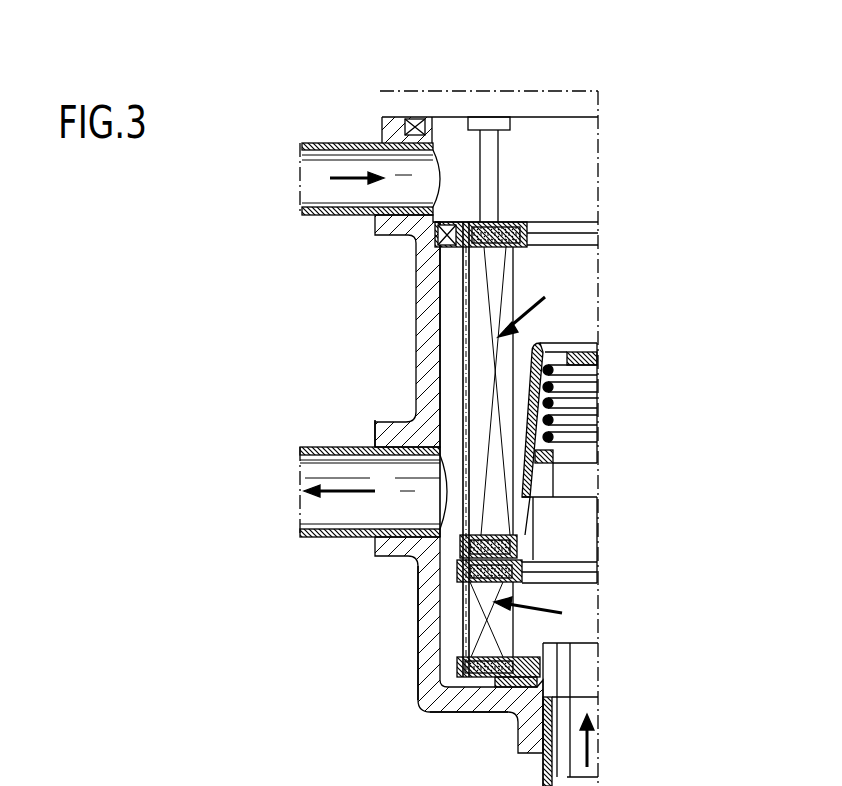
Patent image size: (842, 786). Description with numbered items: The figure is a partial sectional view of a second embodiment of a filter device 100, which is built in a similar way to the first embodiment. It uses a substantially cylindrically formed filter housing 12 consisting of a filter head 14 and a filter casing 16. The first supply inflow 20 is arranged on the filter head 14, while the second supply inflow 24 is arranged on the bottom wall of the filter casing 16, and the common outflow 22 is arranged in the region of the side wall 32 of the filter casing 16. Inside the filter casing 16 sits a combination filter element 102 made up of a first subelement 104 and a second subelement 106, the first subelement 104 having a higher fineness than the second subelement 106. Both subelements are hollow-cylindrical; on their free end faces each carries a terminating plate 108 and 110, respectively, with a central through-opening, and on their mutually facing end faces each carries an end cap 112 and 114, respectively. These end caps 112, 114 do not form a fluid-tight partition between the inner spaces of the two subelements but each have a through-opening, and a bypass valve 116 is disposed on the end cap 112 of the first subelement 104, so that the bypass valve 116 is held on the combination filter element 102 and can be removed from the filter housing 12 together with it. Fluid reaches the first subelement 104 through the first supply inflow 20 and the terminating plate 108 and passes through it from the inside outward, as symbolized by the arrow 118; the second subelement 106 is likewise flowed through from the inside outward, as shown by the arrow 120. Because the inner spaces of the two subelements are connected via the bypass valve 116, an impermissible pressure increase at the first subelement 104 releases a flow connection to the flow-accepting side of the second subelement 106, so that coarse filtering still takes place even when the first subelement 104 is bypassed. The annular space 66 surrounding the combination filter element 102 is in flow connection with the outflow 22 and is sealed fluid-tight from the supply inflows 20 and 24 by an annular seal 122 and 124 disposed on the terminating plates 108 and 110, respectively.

The filter device 100 is at (632, 189).
The filter head 14 is at (377, 127).
The first supply inflow 20 is at (377, 226).
The annular seal 122 is at (448, 232).
The combination filter element 102 is at (460, 306).
The first subelement 104 is at (460, 342).
The annular space 66 is at (458, 392).
The common outflow 22 is at (390, 422).
The filter housing 12 is at (414, 578).
The side wall 32 is at (428, 603).
The second subelement 106 is at (460, 633).
The filter casing 16 is at (416, 668).
The terminating plate 110 is at (457, 687).
The annular seal 124 is at (495, 713).
The second supply inflow 24 is at (541, 757).
The terminating plate 108 is at (530, 231).
The arrow 118 is at (547, 315).
The bypass valve 116 is at (603, 357).
The end cap 112 is at (530, 517).
The end cap 114 is at (524, 567).
The arrow 120 is at (550, 607).